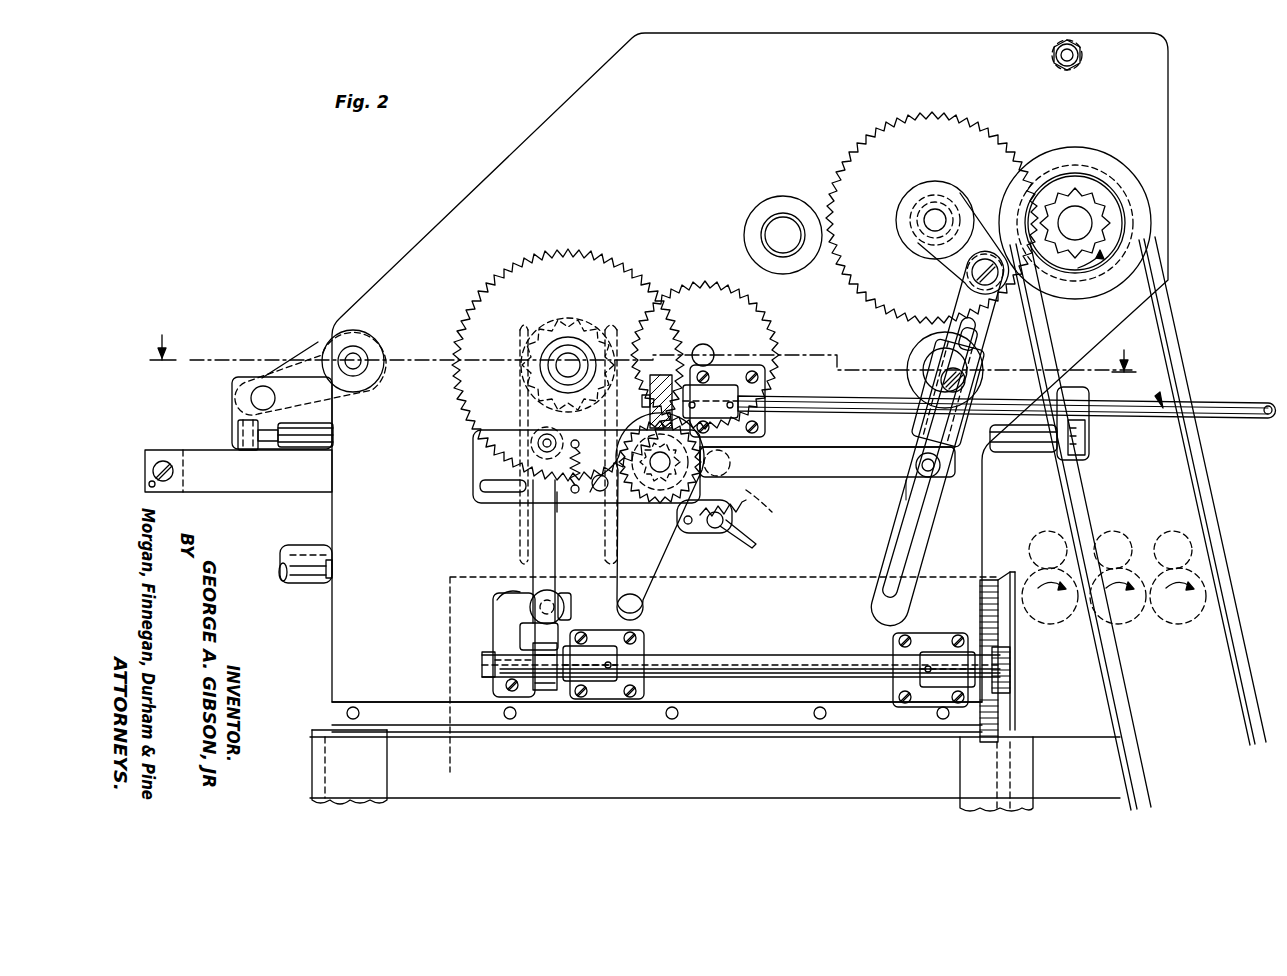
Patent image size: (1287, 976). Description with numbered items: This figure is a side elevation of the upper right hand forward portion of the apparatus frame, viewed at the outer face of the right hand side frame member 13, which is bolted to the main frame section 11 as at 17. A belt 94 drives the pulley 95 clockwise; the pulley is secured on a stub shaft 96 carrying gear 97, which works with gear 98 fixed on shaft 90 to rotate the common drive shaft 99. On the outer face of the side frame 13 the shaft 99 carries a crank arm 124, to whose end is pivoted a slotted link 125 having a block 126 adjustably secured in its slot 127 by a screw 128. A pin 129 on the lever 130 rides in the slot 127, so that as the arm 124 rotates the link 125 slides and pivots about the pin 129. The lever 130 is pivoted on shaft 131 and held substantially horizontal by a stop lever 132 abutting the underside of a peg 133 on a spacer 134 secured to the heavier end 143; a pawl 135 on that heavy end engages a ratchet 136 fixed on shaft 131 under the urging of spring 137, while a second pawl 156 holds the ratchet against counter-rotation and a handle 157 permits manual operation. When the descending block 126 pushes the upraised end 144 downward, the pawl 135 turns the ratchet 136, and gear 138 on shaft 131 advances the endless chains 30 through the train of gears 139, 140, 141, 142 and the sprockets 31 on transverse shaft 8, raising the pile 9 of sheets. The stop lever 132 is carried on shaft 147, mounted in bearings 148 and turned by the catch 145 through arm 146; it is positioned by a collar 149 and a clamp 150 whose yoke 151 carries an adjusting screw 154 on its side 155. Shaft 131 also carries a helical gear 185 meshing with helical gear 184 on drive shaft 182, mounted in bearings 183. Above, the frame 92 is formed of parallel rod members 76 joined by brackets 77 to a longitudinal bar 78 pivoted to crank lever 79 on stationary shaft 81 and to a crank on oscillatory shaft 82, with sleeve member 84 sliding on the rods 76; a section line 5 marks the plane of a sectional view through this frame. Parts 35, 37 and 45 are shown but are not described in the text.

The right hand side frame member 13 is at (565, 112).
The section line 5 is at (638, 359).
The bolt 17 is at (762, 738).
The main frame section 11 is at (668, 781).
The belt 94 is at (1195, 480).
The rollers 35 is at (1070, 624).
The gear 98 is at (936, 118).
The drive shaft 99 is at (934, 222).
The crank arm 124 is at (966, 262).
The slotted link 125 is at (975, 296).
The pulley 95 is at (1128, 182).
The gear 97 is at (1090, 192).
The stub shaft 96 is at (1092, 212).
The shaft 90 is at (782, 235).
The gear 142 is at (606, 268).
The transverse shaft 8 is at (560, 358).
The sprocket 31 is at (522, 405).
The endless chain 30 is at (518, 533).
The gear 140 is at (770, 320).
The gear 141 is at (704, 343).
The helical gear 184 is at (658, 374).
The bearing 183 is at (720, 398).
The drive shaft 182 is at (852, 398).
The helical gear 185 is at (640, 445).
The heavier end of lever 143 is at (473, 462).
The lever 130 is at (472, 492).
The shaft 131 is at (730, 461).
The upraised end of lever 144 is at (856, 470).
The peg 133 is at (530, 442).
The spacer 134 is at (552, 440).
The spring 137 is at (591, 462).
The pawl 135 is at (548, 492).
The ratchet 136 is at (616, 508).
The stop lever 132 is at (533, 563).
The gear 138 is at (650, 508).
The handle 157 is at (646, 596).
The gear 139 is at (753, 509).
The second pawl 156 is at (702, 532).
The pile of flat sheets 9 is at (768, 590).
The yoke 151 is at (508, 600).
The adjusting screw 154 is at (566, 600).
The yoke side 155 is at (568, 617).
The clamp 150 is at (500, 690).
The collar 149 is at (560, 685).
The bearing 148 is at (572, 700).
The shaft 147 is at (780, 658).
The arm 146 is at (1016, 640).
The catch 145 is at (994, 578).
The oscillatory shaft 82 is at (934, 358).
The screw 128 is at (966, 383).
The block 126 is at (928, 426).
The pin 129 is at (922, 478).
The slot 127 is at (908, 518).
The stationary shaft 81 is at (362, 350).
The crank lever 79 is at (312, 346).
The frame 92 is at (230, 380).
The longitudinal bar 78 is at (236, 396).
The bracket 77 is at (242, 418).
The rod member 76 is at (278, 440).
The sleeve member 84 is at (312, 442).
The bar 45 is at (222, 482).
The knob 37 is at (302, 582).